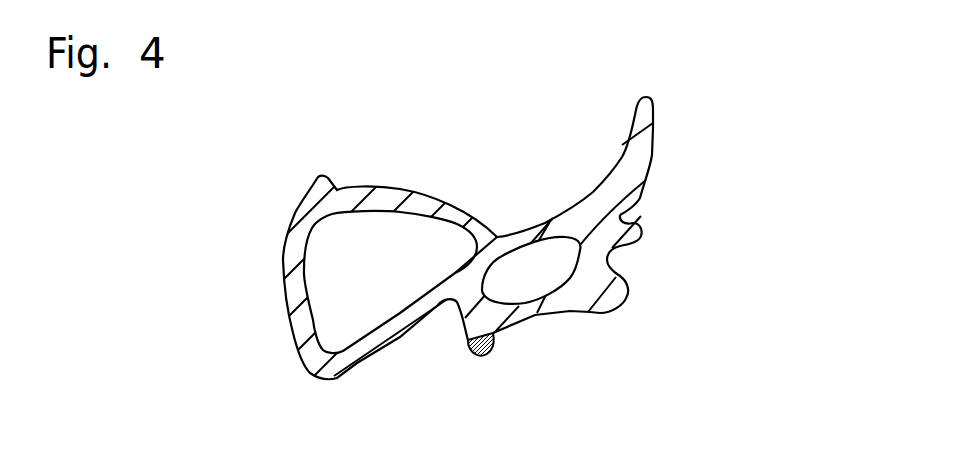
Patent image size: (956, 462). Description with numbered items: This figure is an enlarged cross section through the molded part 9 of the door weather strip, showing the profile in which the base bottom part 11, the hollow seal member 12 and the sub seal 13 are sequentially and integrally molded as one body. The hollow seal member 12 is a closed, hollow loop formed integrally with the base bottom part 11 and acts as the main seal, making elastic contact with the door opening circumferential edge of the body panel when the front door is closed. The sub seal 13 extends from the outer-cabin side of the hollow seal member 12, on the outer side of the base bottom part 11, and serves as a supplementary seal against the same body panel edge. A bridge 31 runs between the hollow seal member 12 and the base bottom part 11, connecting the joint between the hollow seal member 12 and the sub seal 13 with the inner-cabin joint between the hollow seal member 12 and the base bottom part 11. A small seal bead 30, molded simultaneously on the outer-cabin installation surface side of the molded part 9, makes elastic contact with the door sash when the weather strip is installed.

The molded part 9 is at (699, 119).
The base bottom part 11 is at (577, 306).
The hollow seal member 12 is at (384, 197).
The sub seal 13 is at (640, 116).
The seal bead 30 is at (480, 354).
The bridge 31 is at (472, 273).